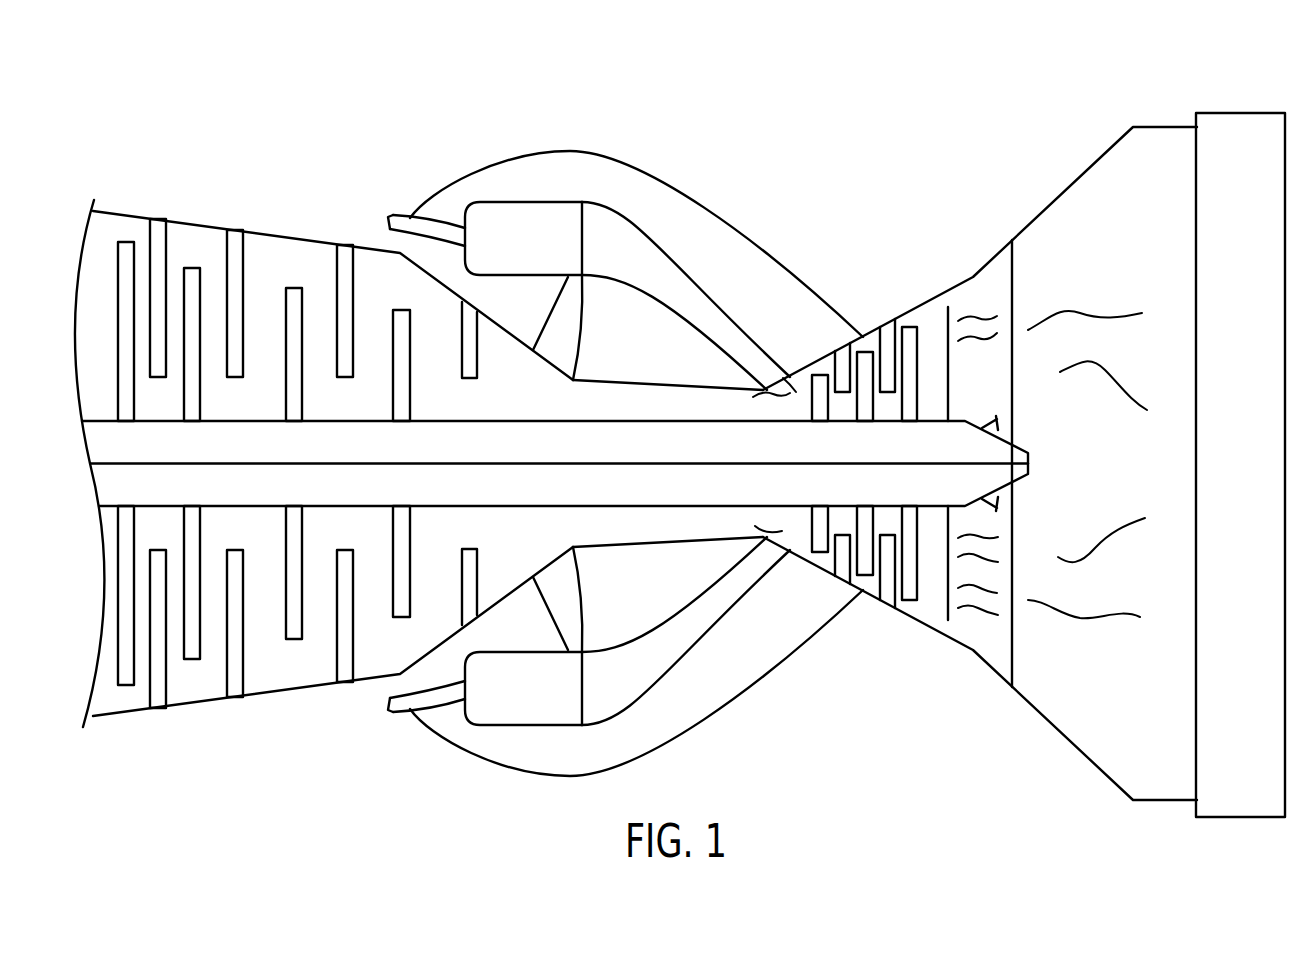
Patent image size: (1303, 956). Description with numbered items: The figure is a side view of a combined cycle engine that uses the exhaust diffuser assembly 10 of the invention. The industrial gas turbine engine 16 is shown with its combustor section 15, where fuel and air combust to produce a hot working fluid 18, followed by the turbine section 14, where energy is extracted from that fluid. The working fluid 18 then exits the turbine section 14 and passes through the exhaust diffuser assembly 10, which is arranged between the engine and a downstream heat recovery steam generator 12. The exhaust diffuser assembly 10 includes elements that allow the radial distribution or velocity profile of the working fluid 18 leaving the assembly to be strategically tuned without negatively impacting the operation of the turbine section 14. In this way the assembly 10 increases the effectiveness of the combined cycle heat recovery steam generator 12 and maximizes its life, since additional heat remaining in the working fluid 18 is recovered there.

The exhaust diffuser assembly 10 is at (987, 412).
The heat recovery steam generator 12 is at (1238, 93).
The turbine section 14 is at (868, 316).
The combustor section 15 is at (505, 182).
The industrial gas turbine engine 16 is at (395, 165).
The working fluid 18 is at (800, 385).